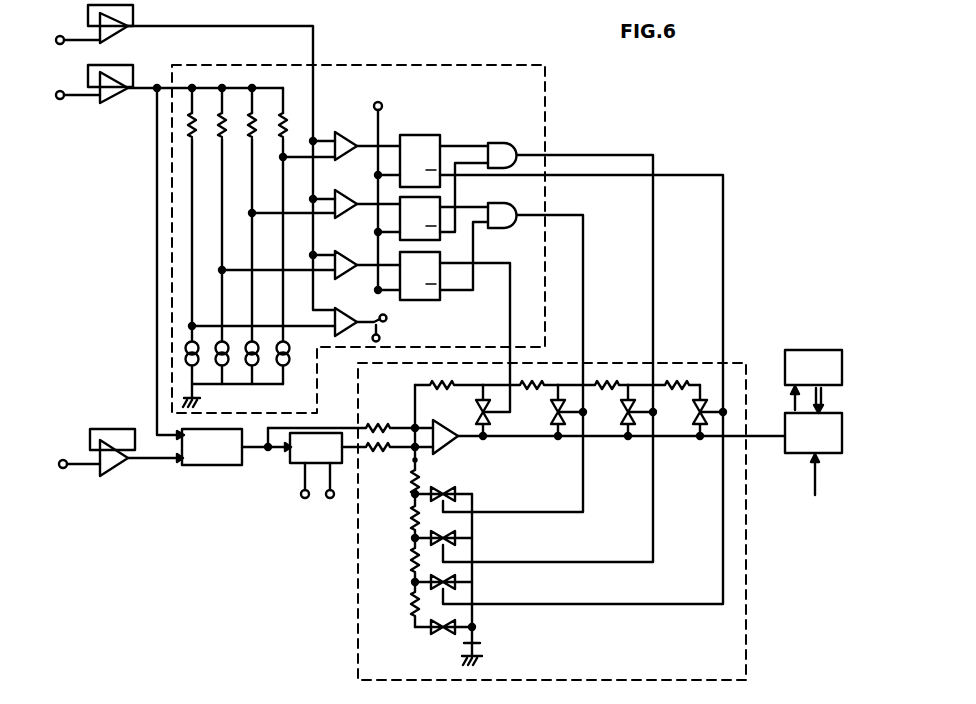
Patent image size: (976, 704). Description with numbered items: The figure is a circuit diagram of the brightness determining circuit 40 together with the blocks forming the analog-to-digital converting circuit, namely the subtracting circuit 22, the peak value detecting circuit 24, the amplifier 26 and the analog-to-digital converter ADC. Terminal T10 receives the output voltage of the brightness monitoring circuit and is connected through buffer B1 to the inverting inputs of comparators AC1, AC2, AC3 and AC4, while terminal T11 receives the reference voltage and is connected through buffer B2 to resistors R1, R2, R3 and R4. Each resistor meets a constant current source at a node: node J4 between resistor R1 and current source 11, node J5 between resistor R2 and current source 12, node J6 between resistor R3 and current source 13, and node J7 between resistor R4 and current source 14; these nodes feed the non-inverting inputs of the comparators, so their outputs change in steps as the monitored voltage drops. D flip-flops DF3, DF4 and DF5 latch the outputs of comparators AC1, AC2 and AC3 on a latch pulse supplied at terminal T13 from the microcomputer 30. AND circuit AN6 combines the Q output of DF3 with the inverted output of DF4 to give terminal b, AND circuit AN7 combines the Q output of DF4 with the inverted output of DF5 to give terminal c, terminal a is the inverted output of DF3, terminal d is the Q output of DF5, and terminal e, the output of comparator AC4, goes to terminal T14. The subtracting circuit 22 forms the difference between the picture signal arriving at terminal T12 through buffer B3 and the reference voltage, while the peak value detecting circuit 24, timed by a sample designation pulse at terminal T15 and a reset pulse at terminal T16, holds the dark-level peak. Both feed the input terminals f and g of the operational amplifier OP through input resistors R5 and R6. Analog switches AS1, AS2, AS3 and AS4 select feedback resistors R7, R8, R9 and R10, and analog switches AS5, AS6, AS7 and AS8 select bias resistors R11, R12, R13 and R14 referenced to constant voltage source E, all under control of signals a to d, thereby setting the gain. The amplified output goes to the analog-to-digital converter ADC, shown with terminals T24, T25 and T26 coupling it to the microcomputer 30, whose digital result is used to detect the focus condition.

The terminal T10 is at (60, 44).
The terminal T11 is at (60, 99).
The terminal T12 is at (63, 468).
The terminal T13 is at (378, 102).
The terminal T14 is at (387, 320).
The terminal T15 is at (303, 498).
The terminal T16 is at (332, 498).
The ADC control terminal T24 is at (816, 490).
The terminal T25 is at (774, 400).
The terminal T26 is at (840, 401).
The buffer B1 is at (116, 36).
The buffer B2 is at (116, 97).
The buffer B3 is at (118, 463).
The brightness determining circuit 40 is at (500, 63).
The amplifier 26 is at (748, 588).
The subtracting circuit 22 is at (200, 465).
The peak value detecting circuit 24 is at (292, 455).
The microcomputer 30 is at (818, 350).
The analog-to-digital converter ADC is at (842, 437).
The resistor R1 is at (297, 126).
The resistor R2 is at (267, 126).
The resistor R3 is at (237, 126).
The resistor R4 is at (206, 126).
The input resistor R5 is at (350, 417).
The input resistor R6 is at (387, 459).
The resistor R7 is at (449, 397).
The resistor R8 is at (520, 397).
The resistor R9 is at (593, 397).
The resistor R10 is at (664, 397).
The resistor R11 is at (411, 476).
The resistor R12 is at (394, 516).
The resistor R13 is at (394, 560).
The resistor R14 is at (411, 612).
The node J4 is at (295, 163).
The node J5 is at (279, 221).
The node J6 is at (265, 272).
The node J7 is at (262, 317).
The constant current source 11 is at (287, 366).
The constant current source 12 is at (256, 366).
The constant current source 13 is at (226, 366).
The constant current source 14 is at (196, 366).
The comparator AC1 is at (345, 124).
The comparator AC2 is at (344, 193).
The comparator AC3 is at (343, 252).
The comparator AC4 is at (343, 311).
The D flip-flop DF3 is at (426, 135).
The D flip-flop DF4 is at (440, 207).
The D flip-flop DF5 is at (440, 296).
The AND circuit AN6 is at (502, 143).
The AND circuit AN7 is at (505, 229).
The operational amplifier OP is at (438, 424).
The analog switch AS1 is at (696, 426).
The analog switch AS2 is at (624, 426).
The analog switch AS3 is at (554, 426).
The analog switch AS4 is at (479, 426).
The analog switch AS5 is at (435, 636).
The analog switch AS6 is at (456, 587).
The analog switch AS7 is at (456, 543).
The analog switch AS8 is at (456, 499).
The constant voltage source E is at (481, 651).
The terminal a is at (581, 389).
The terminal b is at (548, 347).
The terminal c is at (513, 353).
The terminal d is at (475, 337).
The terminal e is at (377, 347).
The input terminal f is at (410, 437).
The input terminal g is at (427, 466).